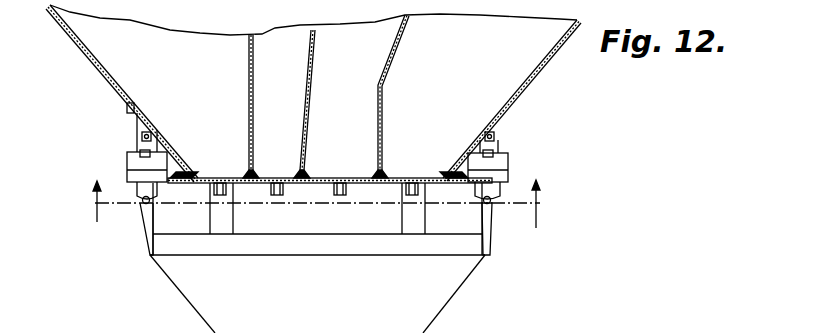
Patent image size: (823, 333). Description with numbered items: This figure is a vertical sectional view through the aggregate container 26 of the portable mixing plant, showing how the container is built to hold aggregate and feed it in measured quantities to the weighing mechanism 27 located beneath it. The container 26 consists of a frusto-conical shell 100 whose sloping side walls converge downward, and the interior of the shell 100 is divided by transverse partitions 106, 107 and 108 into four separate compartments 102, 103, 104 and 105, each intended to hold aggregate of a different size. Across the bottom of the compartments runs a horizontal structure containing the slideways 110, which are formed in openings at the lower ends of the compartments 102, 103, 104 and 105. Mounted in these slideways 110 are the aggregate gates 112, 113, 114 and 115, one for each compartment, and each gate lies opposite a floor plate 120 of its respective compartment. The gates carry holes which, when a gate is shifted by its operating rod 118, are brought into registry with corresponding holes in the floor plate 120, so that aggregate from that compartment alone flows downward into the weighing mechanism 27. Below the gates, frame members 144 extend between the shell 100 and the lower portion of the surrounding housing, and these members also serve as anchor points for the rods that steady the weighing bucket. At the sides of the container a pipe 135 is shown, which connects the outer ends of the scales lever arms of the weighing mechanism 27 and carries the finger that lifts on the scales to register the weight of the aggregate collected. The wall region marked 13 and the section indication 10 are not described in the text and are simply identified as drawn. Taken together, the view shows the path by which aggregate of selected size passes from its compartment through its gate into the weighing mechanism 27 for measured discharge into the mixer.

The section line 10 is at (319, 204).
The hopper wall 13 is at (462, 164).
The aggregate container 26 is at (128, 63).
The weighing mechanism 27 is at (414, 300).
The frusto-conical shell 100 is at (507, 90).
The compartment 102 is at (203, 81).
The compartment 103 is at (290, 77).
The compartment 104 is at (365, 75).
The compartment 105 is at (478, 76).
The transverse partition 106 is at (254, 106).
The transverse partition 107 is at (305, 106).
The transverse partition 108 is at (383, 106).
The slideways 110 is at (197, 178).
The aggregate gate 112 is at (206, 184).
The aggregate gate 113 is at (291, 185).
The aggregate gate 114 is at (362, 185).
The aggregate gate 115 is at (428, 185).
The operating rod 118 is at (274, 183).
The floor plate 120 is at (322, 182).
The pipe 135 is at (500, 157).
The frame members 144 is at (224, 228).